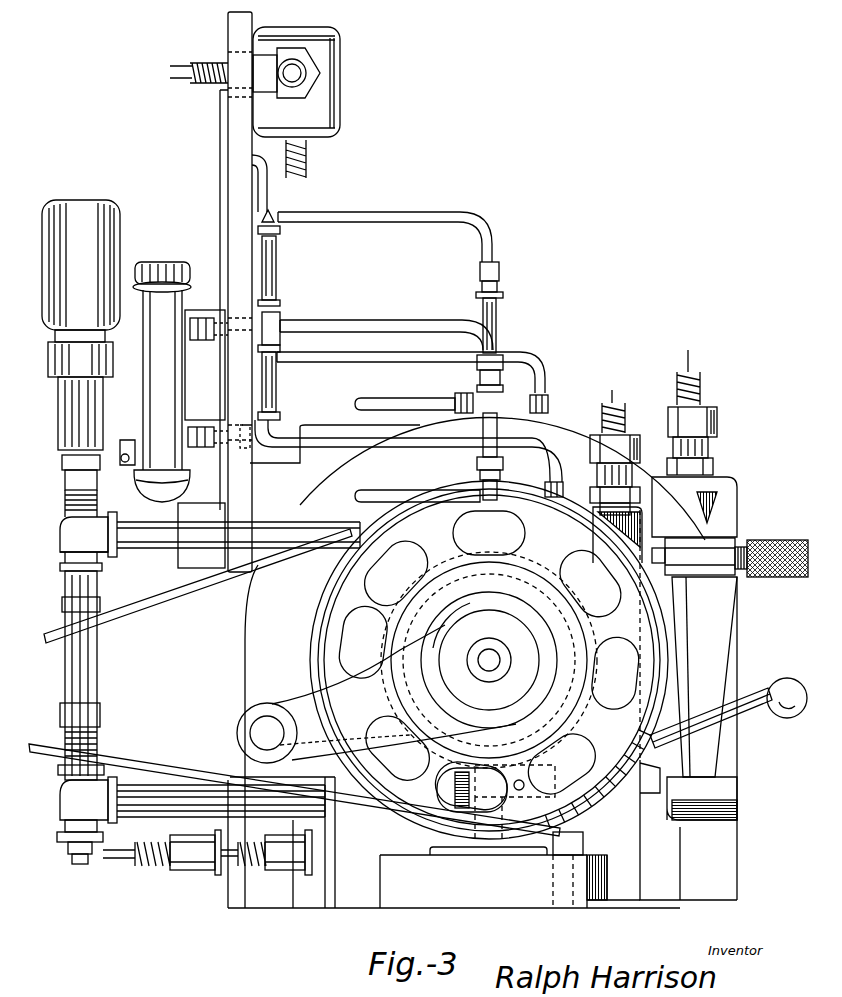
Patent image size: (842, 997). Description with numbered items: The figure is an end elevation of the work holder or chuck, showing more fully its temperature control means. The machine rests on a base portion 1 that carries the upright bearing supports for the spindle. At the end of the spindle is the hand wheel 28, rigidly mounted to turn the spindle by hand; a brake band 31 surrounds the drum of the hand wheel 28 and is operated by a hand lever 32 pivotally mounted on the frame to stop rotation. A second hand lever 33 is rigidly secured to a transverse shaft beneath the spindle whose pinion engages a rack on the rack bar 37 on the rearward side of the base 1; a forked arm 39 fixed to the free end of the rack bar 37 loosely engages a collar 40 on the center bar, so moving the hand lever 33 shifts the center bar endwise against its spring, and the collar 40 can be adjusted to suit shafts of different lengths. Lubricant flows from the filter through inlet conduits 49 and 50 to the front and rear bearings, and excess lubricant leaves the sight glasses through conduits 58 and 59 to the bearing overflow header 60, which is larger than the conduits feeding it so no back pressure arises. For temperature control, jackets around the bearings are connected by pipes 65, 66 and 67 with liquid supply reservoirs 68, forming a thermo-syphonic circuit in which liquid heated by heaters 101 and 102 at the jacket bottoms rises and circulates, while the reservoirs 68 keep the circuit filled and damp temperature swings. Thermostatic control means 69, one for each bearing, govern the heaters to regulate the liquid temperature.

The base portion 1 is at (717, 862).
The hand wheel 28 is at (627, 553).
The brake band 31 is at (570, 603).
The hand lever 32 is at (747, 707).
The hand lever 33 is at (690, 640).
The rack bar 37 is at (490, 657).
The forked arm 39 is at (387, 712).
The collar 40 is at (530, 652).
The inlet conduit 49 is at (387, 401).
The inlet conduit 50 is at (390, 496).
The overflow conduit 58 is at (402, 215).
The overflow conduit 59 is at (375, 329).
The bearing overflow header 60 is at (182, 377).
The pipe 65 is at (163, 797).
The pipe 66 is at (160, 537).
The pipe 67 is at (83, 677).
The liquid supply reservoir 68 is at (112, 230).
The thermostatic control means 69 is at (317, 100).
The heater 101 is at (197, 862).
The heater 102 is at (290, 858).